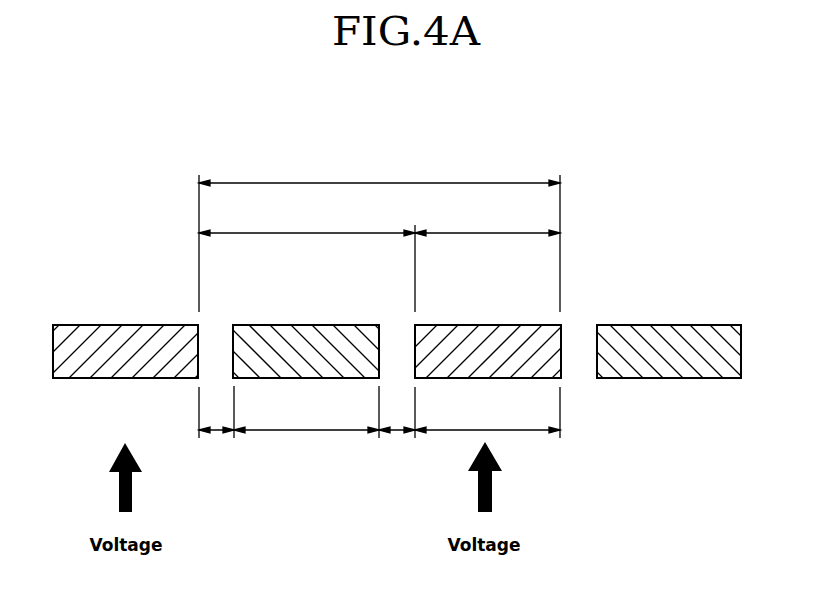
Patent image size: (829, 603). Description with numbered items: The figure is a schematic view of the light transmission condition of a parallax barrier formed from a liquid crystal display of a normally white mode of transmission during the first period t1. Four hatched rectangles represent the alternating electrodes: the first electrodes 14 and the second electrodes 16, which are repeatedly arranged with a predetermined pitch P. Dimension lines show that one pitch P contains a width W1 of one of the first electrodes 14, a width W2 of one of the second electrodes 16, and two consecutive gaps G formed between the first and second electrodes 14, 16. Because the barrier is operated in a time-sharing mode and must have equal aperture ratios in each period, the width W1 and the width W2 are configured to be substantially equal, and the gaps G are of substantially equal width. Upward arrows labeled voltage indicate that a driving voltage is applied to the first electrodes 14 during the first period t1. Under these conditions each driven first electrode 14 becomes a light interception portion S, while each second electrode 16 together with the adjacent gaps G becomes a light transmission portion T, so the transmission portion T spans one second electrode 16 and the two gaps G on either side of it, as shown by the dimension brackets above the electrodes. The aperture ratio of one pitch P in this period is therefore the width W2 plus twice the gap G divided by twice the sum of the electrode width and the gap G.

The first electrode 14 is at (118, 334).
The second electrode 16 is at (312, 334).
The pitch P is at (379, 171).
The light transmission portion T is at (307, 221).
The light interception portion S is at (487, 221).
The gap G is at (307, 418).
The width of first electrode W1 is at (487, 418).
The width of second electrode W2 is at (306, 418).
The first period t1 is at (683, 209).